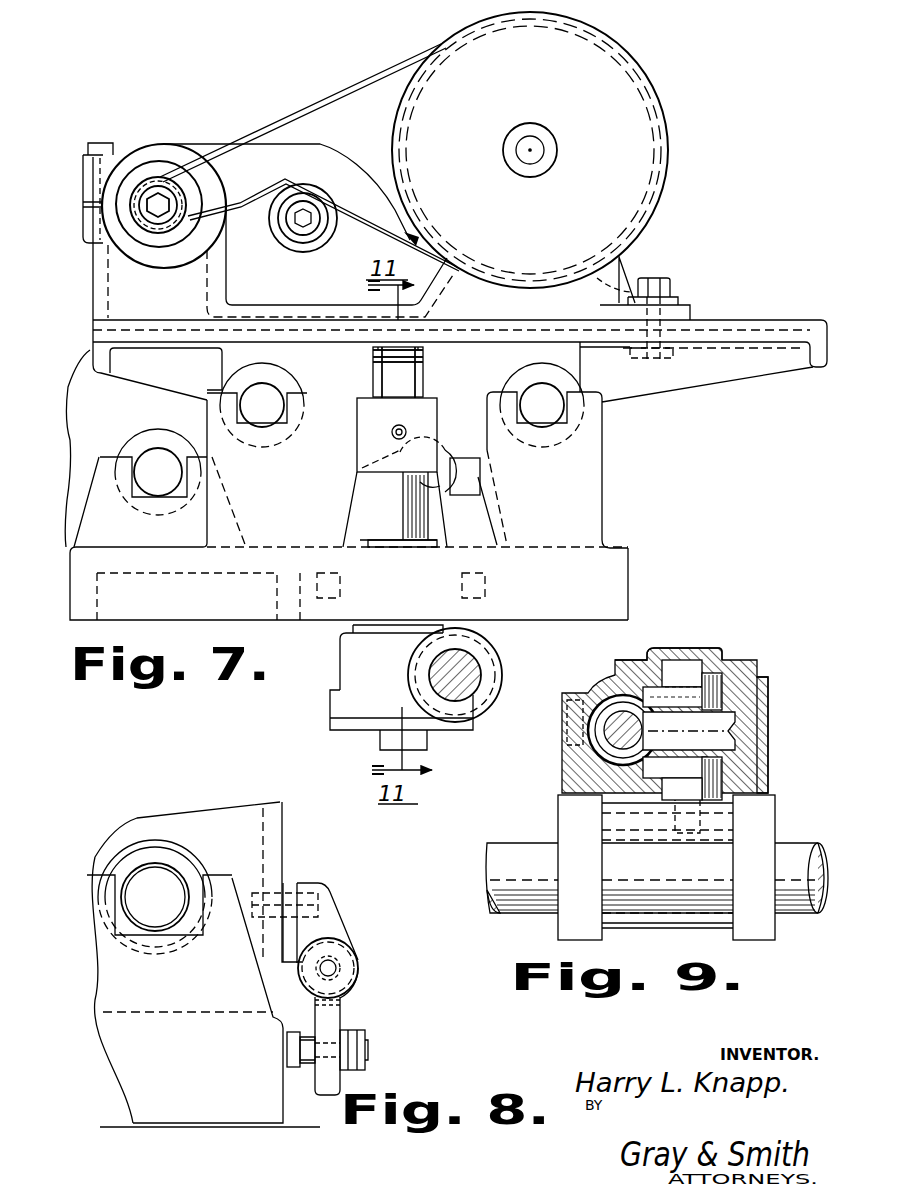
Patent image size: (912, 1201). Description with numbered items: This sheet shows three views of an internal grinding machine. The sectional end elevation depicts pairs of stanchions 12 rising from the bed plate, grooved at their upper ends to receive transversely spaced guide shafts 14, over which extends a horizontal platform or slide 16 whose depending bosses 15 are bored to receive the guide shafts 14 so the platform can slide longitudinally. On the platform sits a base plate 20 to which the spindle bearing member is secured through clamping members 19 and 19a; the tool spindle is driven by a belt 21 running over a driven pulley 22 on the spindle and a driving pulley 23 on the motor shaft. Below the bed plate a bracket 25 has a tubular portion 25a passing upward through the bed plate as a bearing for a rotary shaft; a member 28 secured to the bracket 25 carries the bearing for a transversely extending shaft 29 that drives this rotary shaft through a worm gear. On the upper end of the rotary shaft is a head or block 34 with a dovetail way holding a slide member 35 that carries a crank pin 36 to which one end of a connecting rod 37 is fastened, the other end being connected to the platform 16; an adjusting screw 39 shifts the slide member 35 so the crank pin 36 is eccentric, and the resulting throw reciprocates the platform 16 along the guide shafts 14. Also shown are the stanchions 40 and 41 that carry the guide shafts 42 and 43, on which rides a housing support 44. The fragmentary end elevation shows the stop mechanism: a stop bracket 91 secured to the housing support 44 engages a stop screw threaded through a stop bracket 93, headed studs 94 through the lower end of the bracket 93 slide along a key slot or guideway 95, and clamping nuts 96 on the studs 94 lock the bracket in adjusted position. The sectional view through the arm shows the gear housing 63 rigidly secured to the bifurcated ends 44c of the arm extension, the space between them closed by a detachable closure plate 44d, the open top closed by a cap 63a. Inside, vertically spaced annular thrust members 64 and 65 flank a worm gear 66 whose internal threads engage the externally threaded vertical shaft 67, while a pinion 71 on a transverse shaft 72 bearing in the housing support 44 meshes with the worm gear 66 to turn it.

In FIG. 7, the stanchions 12 is at (312, 478).
In FIG. 7, the guide shafts 14 is at (268, 415).
In FIG. 7, the bosses 15 is at (288, 372).
In FIG. 7, the platform or slide 16 is at (734, 320).
In FIG. 7, the clamping member 19 is at (140, 145).
In FIG. 7, the clamping member 19a is at (110, 236).
In FIG. 7, the base plate 20 is at (690, 306).
In FIG. 7, the belt 21 is at (352, 92).
In FIG. 7, the driven pulley 22 is at (218, 198).
In FIG. 7, the driving pulley 23 is at (640, 162).
In FIG. 7, the bracket 25 is at (340, 684).
In FIG. 7, the tubular portion 25a is at (424, 513).
In FIG. 7, the member 28 is at (482, 654).
In FIG. 7, the transversely extending shaft 29 is at (472, 672).
In FIG. 7, the head or block 34 is at (436, 432).
In FIG. 7, the slide member 35 is at (372, 415).
In FIG. 7, the crank pin 36 is at (430, 378).
In FIG. 7, the connecting rod 37 is at (428, 370).
In FIG. 7, the adjusting screw 39 is at (405, 428).
In FIG. 8, the stanchions 40 is at (216, 997).
In FIG. 7, the stanchions 41 is at (104, 468).
In FIG. 7, the guide shaft 42 is at (156, 460).
In FIG. 8, the guide shaft 42 is at (158, 878).
In FIG. 7, the guide shaft 43 is at (445, 484).
In FIG. 9, the guide shaft 43 is at (788, 852).
In FIG. 8, the housing support 44 is at (264, 830).
In FIG. 9, the bifurcated ends 44c is at (558, 818).
In FIG. 9, the closure plate 44d is at (690, 877).
In FIG. 9, the gear housing 63 is at (745, 740).
In FIG. 9, the cap 63a is at (726, 657).
In FIG. 9, the annular thrust member 64 is at (672, 694).
In FIG. 9, the annular thrust member 65 is at (745, 778).
In FIG. 9, the worm gear 66 is at (752, 728).
In FIG. 9, the vertical shaft 67 is at (700, 680).
In FIG. 9, the pinion 71 is at (600, 736).
In FIG. 9, the shaft 72 is at (610, 716).
In FIG. 8, the stop bracket 91 is at (322, 914).
In FIG. 8, the stop bracket 93 is at (358, 984).
In FIG. 8, the headed studs 94 is at (287, 1050).
In FIG. 8, the key slot or guideway 95 is at (292, 1068).
In FIG. 8, the clamping nuts 96 is at (365, 1036).